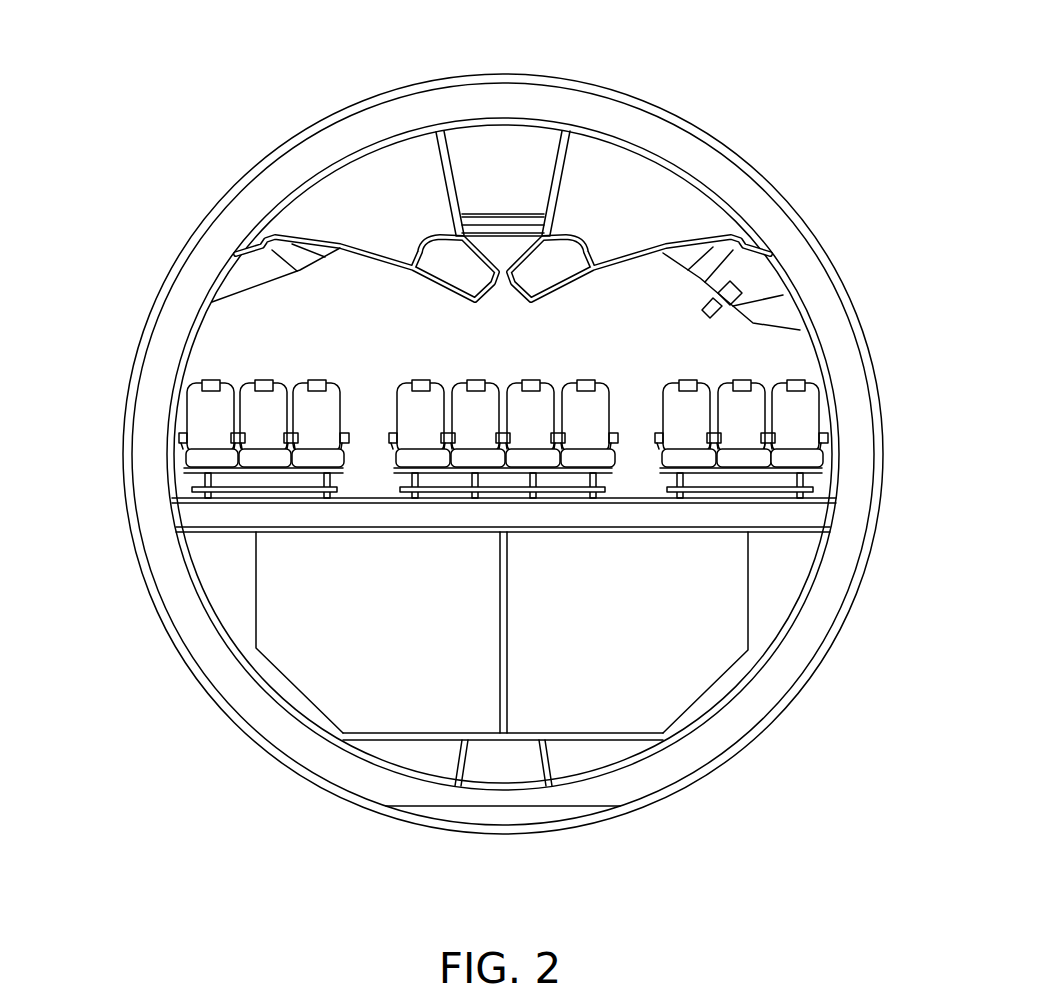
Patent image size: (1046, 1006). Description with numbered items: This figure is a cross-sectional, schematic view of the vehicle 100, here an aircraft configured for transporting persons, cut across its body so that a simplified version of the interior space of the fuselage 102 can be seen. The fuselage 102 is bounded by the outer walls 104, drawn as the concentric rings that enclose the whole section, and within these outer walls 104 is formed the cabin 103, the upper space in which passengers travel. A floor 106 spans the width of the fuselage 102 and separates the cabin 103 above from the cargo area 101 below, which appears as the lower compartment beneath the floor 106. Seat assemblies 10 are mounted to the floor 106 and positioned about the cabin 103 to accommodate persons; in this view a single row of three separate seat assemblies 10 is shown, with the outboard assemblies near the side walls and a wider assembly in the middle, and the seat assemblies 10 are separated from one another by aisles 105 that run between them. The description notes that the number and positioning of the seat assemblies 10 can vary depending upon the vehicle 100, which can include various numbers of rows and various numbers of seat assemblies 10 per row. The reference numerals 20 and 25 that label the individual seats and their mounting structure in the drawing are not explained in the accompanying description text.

The vehicle 100 is at (212, 111).
The cargo area 101 is at (668, 670).
The fuselage 102 is at (770, 168).
The cabin 103 is at (249, 337).
The outer walls 104 is at (763, 632).
The aisles 105 is at (369, 398).
The floor 106 is at (473, 532).
The seat assemblies 10 is at (223, 372).
The passenger seat 20 is at (205, 413).
The seat fastening 25 is at (203, 477).